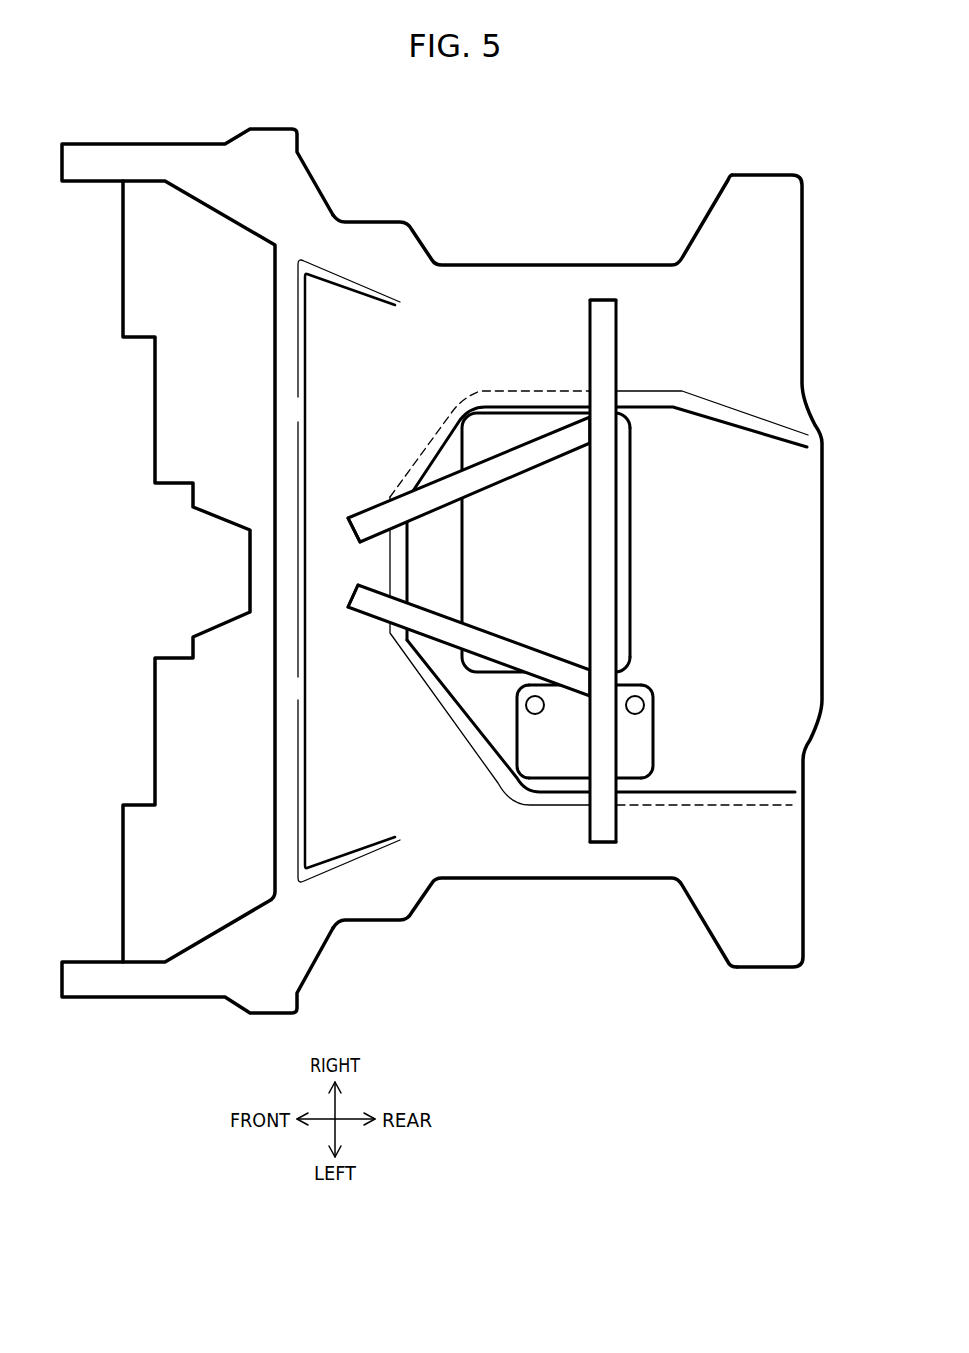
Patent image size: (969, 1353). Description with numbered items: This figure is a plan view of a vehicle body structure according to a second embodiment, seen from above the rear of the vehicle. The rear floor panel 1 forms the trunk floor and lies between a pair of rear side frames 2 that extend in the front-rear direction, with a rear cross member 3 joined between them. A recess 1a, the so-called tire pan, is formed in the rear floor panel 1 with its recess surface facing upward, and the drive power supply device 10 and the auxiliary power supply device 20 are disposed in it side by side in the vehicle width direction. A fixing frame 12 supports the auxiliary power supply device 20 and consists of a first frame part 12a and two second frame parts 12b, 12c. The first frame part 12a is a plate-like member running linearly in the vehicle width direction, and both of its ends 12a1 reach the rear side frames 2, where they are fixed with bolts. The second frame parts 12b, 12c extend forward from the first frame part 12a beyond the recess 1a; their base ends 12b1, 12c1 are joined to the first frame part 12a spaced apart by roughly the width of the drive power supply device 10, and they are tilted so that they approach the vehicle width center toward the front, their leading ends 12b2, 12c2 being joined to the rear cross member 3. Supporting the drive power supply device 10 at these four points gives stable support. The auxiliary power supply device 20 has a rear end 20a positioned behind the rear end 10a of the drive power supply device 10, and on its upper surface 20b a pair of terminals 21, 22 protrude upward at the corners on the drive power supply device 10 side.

The rear floor panel 1 is at (750, 252).
The recess 1a is at (767, 788).
The rear side frame 2 is at (522, 297).
The rear cross member 3 is at (370, 565).
The drive power supply device 10 is at (601, 542).
The rear end of drive power supply device 10a is at (645, 493).
The fixing frame 12 is at (525, 573).
The first frame part 12a is at (627, 573).
The end of first frame part 12a1 is at (603, 310).
The second frame part 12b is at (457, 640).
The base end of second frame part 12b1 is at (577, 673).
The leading end of second frame part 12b2 is at (363, 597).
The second frame part 12c is at (457, 482).
The base end of second frame part 12c1 is at (577, 442).
The leading end of second frame part 12c2 is at (362, 524).
The auxiliary power supply device 20 is at (640, 752).
The rear end of auxiliary power supply device 20a is at (655, 705).
The upper surface of auxiliary power supply device 20b is at (643, 758).
The terminal 21 is at (535, 715).
The terminal 22 is at (655, 678).